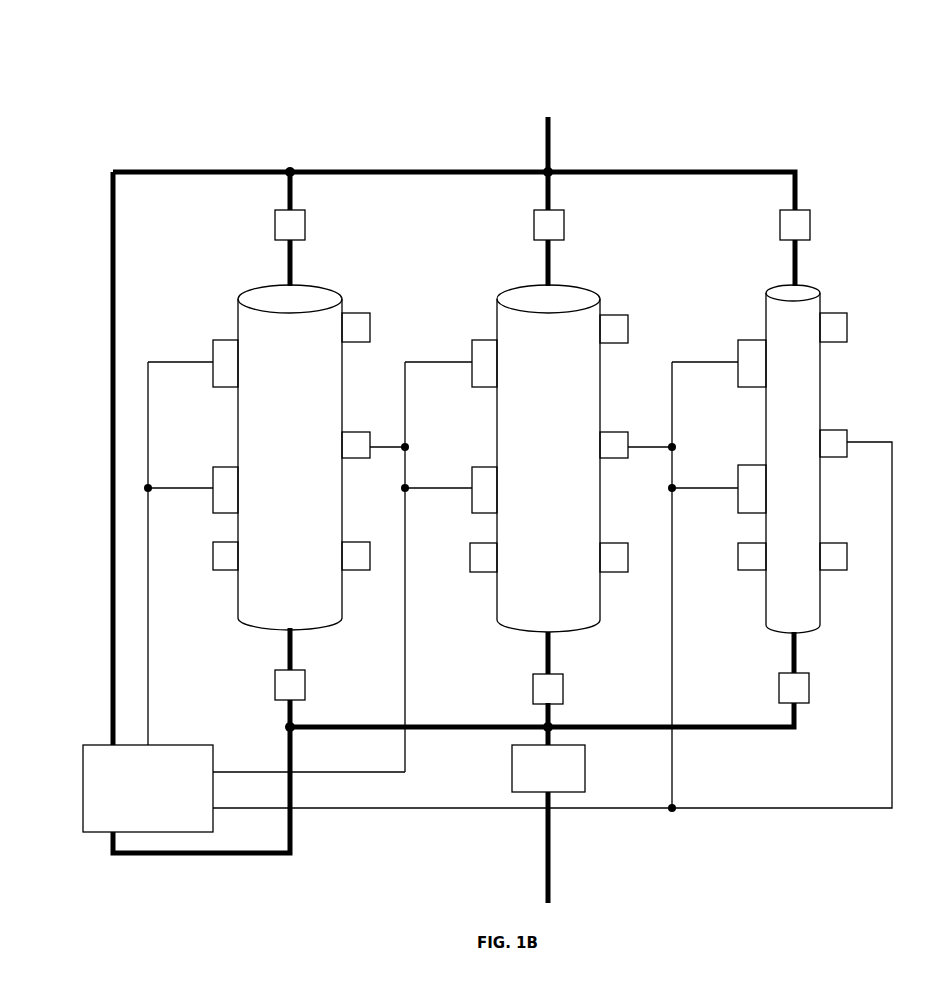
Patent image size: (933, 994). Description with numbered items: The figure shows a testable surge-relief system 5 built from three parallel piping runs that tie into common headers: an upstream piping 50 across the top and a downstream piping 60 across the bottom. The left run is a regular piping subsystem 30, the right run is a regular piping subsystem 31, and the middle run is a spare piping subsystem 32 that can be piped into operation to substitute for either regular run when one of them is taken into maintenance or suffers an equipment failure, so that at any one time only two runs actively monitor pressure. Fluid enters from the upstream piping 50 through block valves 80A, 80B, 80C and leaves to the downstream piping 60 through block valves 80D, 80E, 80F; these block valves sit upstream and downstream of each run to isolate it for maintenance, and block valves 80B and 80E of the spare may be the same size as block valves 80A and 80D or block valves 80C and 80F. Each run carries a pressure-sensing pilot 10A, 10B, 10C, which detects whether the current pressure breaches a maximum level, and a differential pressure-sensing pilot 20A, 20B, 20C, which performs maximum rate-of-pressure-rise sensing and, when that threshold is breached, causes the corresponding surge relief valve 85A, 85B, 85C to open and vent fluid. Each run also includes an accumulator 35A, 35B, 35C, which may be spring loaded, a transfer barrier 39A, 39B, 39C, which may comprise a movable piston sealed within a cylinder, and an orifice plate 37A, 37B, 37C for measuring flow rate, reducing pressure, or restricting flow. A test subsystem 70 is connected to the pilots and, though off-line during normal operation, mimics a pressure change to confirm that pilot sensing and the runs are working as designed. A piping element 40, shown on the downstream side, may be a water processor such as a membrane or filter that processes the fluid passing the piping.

The testable surge-relief system 5 is at (129, 65).
The upstream piping 50 is at (762, 170).
The downstream piping 60 is at (750, 730).
The piping subsystem 30 is at (301, 469).
The spare piping subsystem 32 is at (559, 474).
The piping subsystem 31 is at (803, 472).
The pressure-sensing pilot 10A is at (218, 340).
The pressure-sensing pilot 10B is at (480, 340).
The pressure-sensing pilot 10C is at (746, 340).
The differential pressure-sensing pilot 20A is at (218, 467).
The differential pressure-sensing pilot 20B is at (480, 467).
The differential pressure-sensing pilot 20C is at (746, 465).
The accumulator 35A is at (348, 342).
The accumulator 35B is at (606, 343).
The accumulator 35C is at (826, 342).
The surge relief valve 85A is at (348, 458).
The surge relief valve 85B is at (606, 458).
The surge relief valve 85C is at (826, 457).
The orifice plate 37A is at (348, 570).
The orifice plate 37B is at (606, 572).
The orifice plate 37C is at (826, 570).
The transfer barrier 39A is at (228, 570).
The transfer barrier 39B is at (486, 572).
The transfer barrier 39C is at (753, 570).
The block valve 80A is at (275, 222).
The block valve 80B is at (534, 222).
The block valve 80C is at (780, 222).
The block valve 80D is at (275, 688).
The block valve 80E is at (533, 688).
The block valve 80F is at (779, 688).
The test subsystem 70 is at (159, 807).
The piping element 40 is at (559, 779).